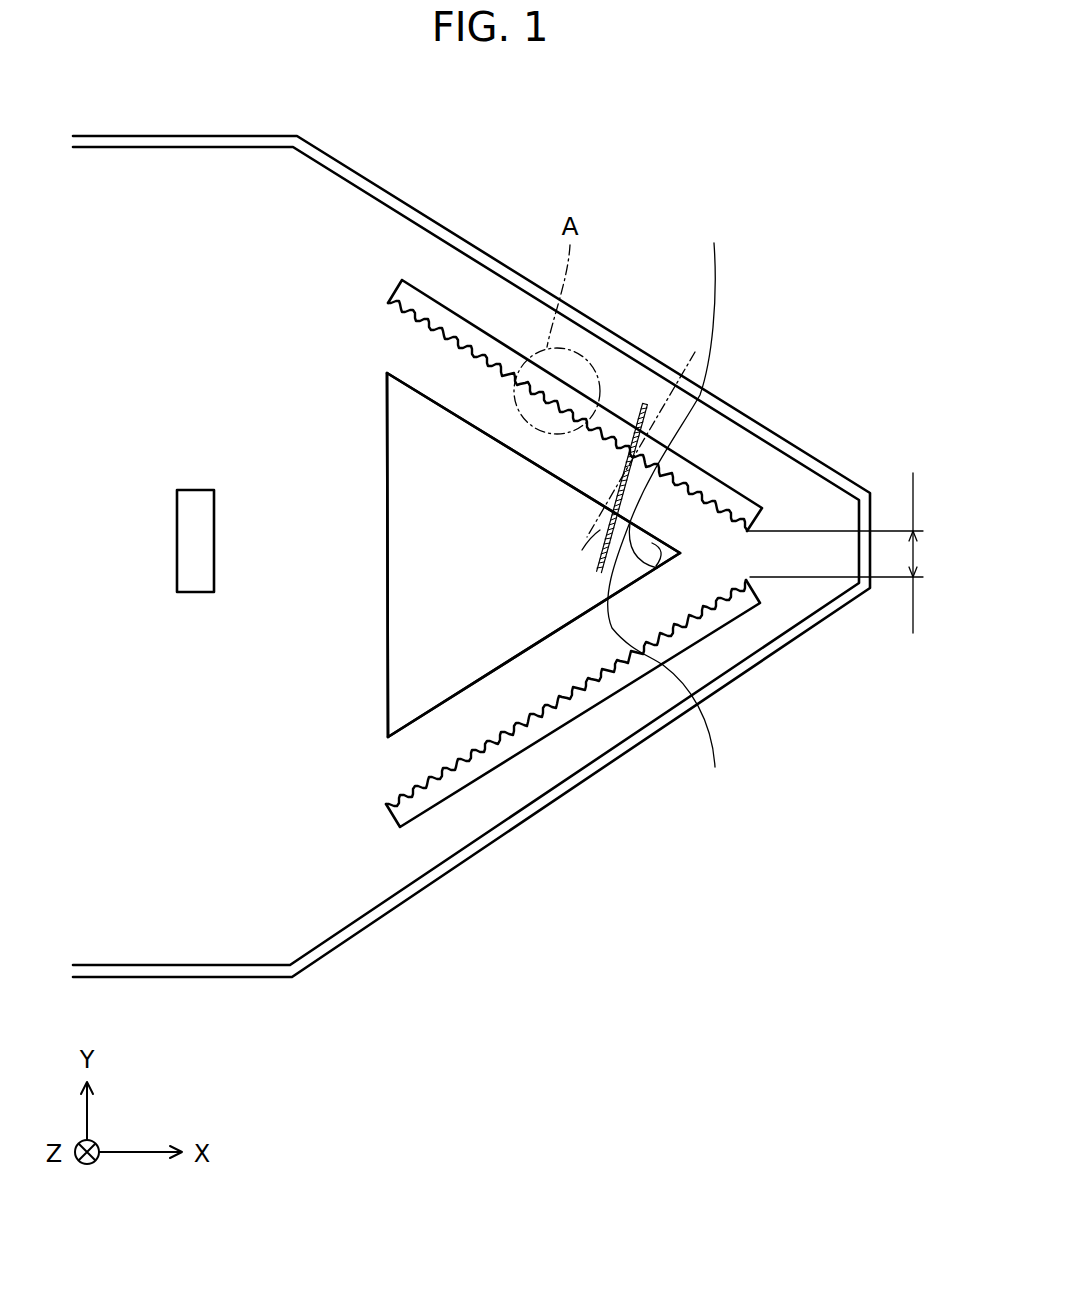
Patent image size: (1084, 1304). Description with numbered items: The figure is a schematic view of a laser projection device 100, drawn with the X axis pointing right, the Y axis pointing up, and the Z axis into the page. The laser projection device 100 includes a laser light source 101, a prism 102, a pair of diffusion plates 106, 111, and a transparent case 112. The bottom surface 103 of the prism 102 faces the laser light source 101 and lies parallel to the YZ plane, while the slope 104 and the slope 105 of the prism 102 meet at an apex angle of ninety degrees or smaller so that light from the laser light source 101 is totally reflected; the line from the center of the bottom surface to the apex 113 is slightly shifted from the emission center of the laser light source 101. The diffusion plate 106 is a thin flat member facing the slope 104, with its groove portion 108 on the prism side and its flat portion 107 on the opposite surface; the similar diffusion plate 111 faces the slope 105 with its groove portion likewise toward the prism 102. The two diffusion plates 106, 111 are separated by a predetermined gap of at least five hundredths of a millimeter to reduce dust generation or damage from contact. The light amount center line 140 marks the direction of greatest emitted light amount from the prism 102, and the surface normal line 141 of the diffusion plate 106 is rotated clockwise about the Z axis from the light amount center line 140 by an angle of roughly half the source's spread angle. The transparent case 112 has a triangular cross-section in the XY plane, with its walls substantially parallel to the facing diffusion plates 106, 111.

The laser projection device 100 is at (678, 170).
The laser light source 101 is at (177, 547).
The prism 102 is at (385, 493).
The bottom surface 103 is at (385, 688).
The slope 104 is at (423, 393).
The slope 105 is at (428, 715).
The diffusion plate 106 is at (521, 371).
The flat portion 107 is at (468, 322).
The groove portion 108 is at (440, 334).
The diffusion plate 111 is at (392, 813).
The transparent case 112 is at (333, 950).
The apex 113 is at (690, 556).
The light amount center line 140 is at (673, 512).
The surface normal line 141 is at (668, 400).